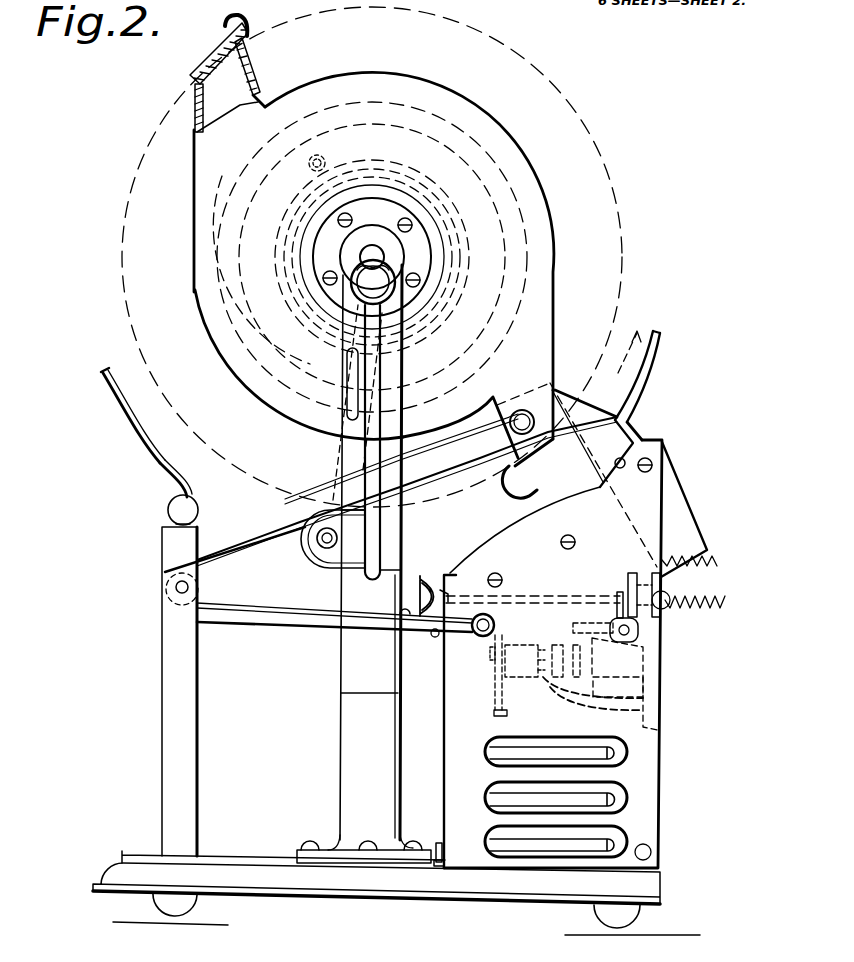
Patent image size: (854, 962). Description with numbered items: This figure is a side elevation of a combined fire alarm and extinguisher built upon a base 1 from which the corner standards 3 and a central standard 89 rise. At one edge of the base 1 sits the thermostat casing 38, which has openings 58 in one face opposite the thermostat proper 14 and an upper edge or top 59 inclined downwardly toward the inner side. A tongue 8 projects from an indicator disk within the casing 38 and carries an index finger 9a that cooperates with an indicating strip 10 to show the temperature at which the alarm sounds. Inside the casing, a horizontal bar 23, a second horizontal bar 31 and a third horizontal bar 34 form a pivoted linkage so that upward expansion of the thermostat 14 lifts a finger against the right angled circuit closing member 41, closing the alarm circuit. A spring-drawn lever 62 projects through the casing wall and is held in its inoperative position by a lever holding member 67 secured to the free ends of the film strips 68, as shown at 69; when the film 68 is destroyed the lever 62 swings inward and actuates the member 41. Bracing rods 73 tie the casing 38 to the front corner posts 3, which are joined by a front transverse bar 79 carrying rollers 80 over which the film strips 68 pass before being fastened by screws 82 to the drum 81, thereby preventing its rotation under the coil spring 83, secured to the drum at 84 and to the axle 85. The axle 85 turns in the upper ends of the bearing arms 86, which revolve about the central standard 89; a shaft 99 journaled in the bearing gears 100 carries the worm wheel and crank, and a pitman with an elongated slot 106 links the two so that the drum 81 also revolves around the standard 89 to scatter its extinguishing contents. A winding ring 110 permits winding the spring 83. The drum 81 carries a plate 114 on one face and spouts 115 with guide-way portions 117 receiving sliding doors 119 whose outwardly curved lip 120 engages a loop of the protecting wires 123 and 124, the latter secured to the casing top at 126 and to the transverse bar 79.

The base 1 is at (240, 870).
The corner standards 3 is at (175, 697).
The tongue 8 is at (439, 867).
The index finger 9a is at (398, 850).
The indicating strip 10 is at (438, 842).
The thermostat proper 14 is at (605, 753).
The horizontal bar 23 is at (548, 682).
The second horizontal bar 31 is at (616, 687).
The third horizontal bar 34 is at (624, 684).
The thermostat casing 38 is at (652, 746).
The right angled circuit closing member 41 is at (612, 604).
The openings 58 is at (492, 738).
The top of casing 59 is at (551, 488).
The lever 62 is at (540, 602).
The lever holding member 67 is at (441, 584).
The film strips 68 is at (250, 540).
The film securing point 69 is at (400, 610).
The bracing rods 73 is at (290, 620).
The front transverse bar 79 is at (176, 593).
The rollers 80 is at (166, 585).
The drum 81 is at (158, 390).
The screws 82 is at (520, 409).
The coil spring 83 is at (247, 200).
The spring securing point 84 is at (310, 161).
The axle 85 is at (378, 248).
The bearing arms 86 is at (402, 534).
The central standard 89 is at (349, 760).
The shaft 99 is at (320, 541).
The bearing gears 100 is at (320, 547).
The elongated longitudinal slot 106 is at (355, 410).
The winding ring 110 is at (395, 291).
The plate 114 is at (389, 287).
The spouts 115 is at (240, 85).
The guide strip 117 is at (212, 64).
The sliding doors 119 is at (192, 82).
The outwardly curved lip 120 is at (249, 27).
The protecting wire 123 is at (167, 465).
The protecting wire 124 is at (648, 398).
The wire securing point 126 is at (614, 462).